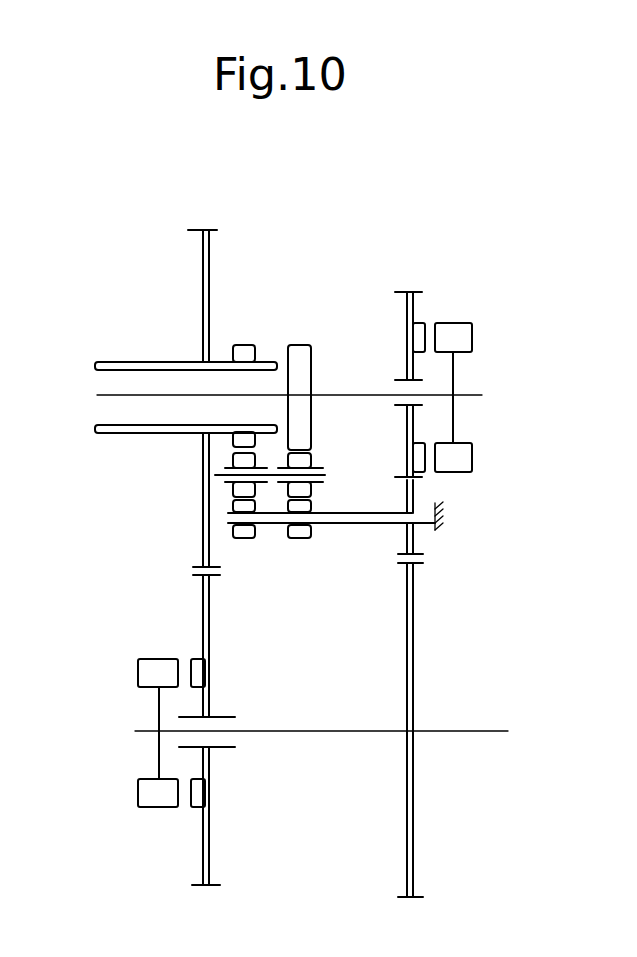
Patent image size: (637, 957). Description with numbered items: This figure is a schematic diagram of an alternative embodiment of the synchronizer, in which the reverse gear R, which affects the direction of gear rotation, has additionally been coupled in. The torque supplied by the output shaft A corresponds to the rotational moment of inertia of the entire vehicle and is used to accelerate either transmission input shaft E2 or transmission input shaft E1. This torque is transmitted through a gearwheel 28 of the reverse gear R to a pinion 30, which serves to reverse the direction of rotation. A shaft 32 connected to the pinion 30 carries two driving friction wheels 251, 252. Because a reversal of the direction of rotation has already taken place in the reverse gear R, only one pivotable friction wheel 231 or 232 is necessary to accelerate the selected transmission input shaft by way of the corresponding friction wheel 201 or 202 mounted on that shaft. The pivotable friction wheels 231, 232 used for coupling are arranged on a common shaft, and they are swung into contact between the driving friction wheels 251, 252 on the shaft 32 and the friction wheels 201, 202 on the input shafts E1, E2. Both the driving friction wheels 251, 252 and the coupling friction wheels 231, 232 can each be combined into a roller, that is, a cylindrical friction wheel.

The transmission input shaft E1 is at (97, 395).
The transmission input shaft E2 is at (153, 362).
The friction wheel 201 is at (300, 357).
The friction wheel 202 is at (240, 353).
The pivotable friction wheel 231 is at (413, 432).
The pivotable friction wheel 232 is at (243, 463).
The friction wheel 251 is at (300, 533).
The friction wheel 252 is at (238, 527).
The reverse gear R is at (433, 345).
The pinion 30 is at (414, 538).
The shaft 32 is at (352, 525).
The gearwheel 28 is at (410, 620).
The output shaft A is at (508, 731).